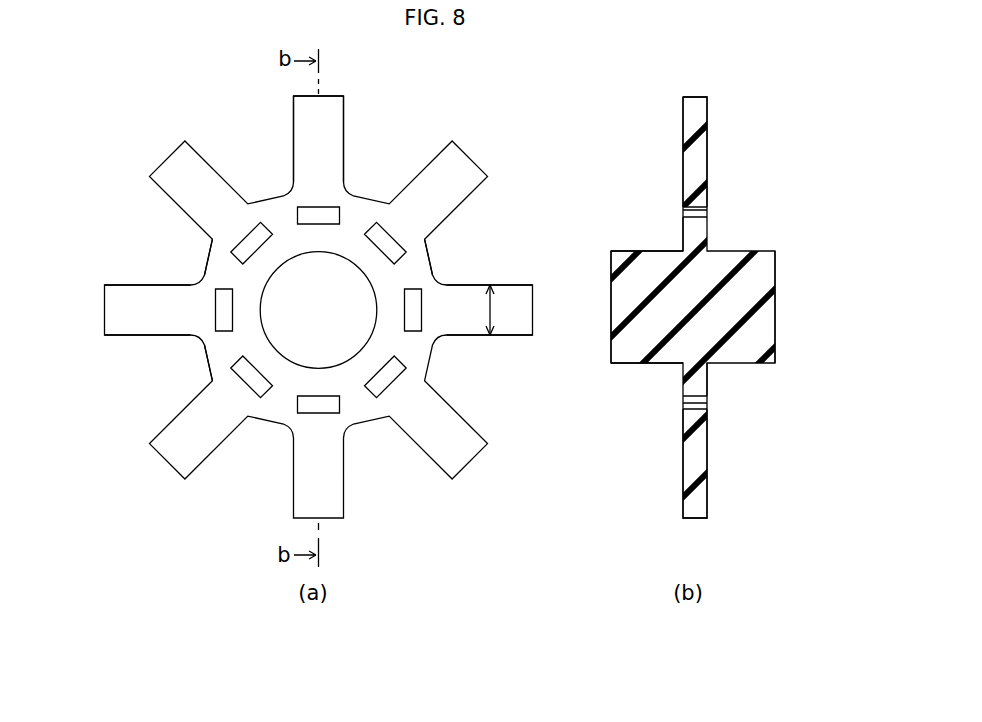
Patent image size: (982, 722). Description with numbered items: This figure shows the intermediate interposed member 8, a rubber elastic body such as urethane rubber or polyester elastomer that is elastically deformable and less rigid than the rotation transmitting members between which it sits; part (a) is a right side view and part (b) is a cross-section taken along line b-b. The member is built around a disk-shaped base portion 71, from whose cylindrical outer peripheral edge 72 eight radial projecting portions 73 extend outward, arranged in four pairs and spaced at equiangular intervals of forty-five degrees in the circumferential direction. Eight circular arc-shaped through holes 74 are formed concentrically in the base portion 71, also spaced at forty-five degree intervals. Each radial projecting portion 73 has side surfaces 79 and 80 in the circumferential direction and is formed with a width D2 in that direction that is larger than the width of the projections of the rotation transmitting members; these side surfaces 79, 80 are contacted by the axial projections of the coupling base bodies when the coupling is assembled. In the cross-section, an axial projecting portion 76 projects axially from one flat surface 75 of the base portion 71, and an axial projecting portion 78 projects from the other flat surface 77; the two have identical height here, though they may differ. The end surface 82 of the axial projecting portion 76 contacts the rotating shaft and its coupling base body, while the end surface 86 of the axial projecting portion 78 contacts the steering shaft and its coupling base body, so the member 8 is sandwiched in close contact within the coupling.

The intermediate interposed member 8 is at (170, 142).
The base portion 71 is at (228, 347).
The cylindrical outer peripheral edge 72 is at (442, 262).
The radial projecting portion 73 is at (328, 108).
The circular arc-shaped through hole 74 is at (253, 236).
The one flat surface 75 is at (682, 236).
The axial projecting portion 76 is at (638, 348).
The other flat surface 77 is at (225, 272).
The axial projecting portion 78 is at (302, 328).
The side surface 79 is at (292, 146).
The side surface 80 is at (347, 137).
The surface 82 is at (611, 302).
The surface 86 is at (335, 336).
The width D2 is at (500, 328).